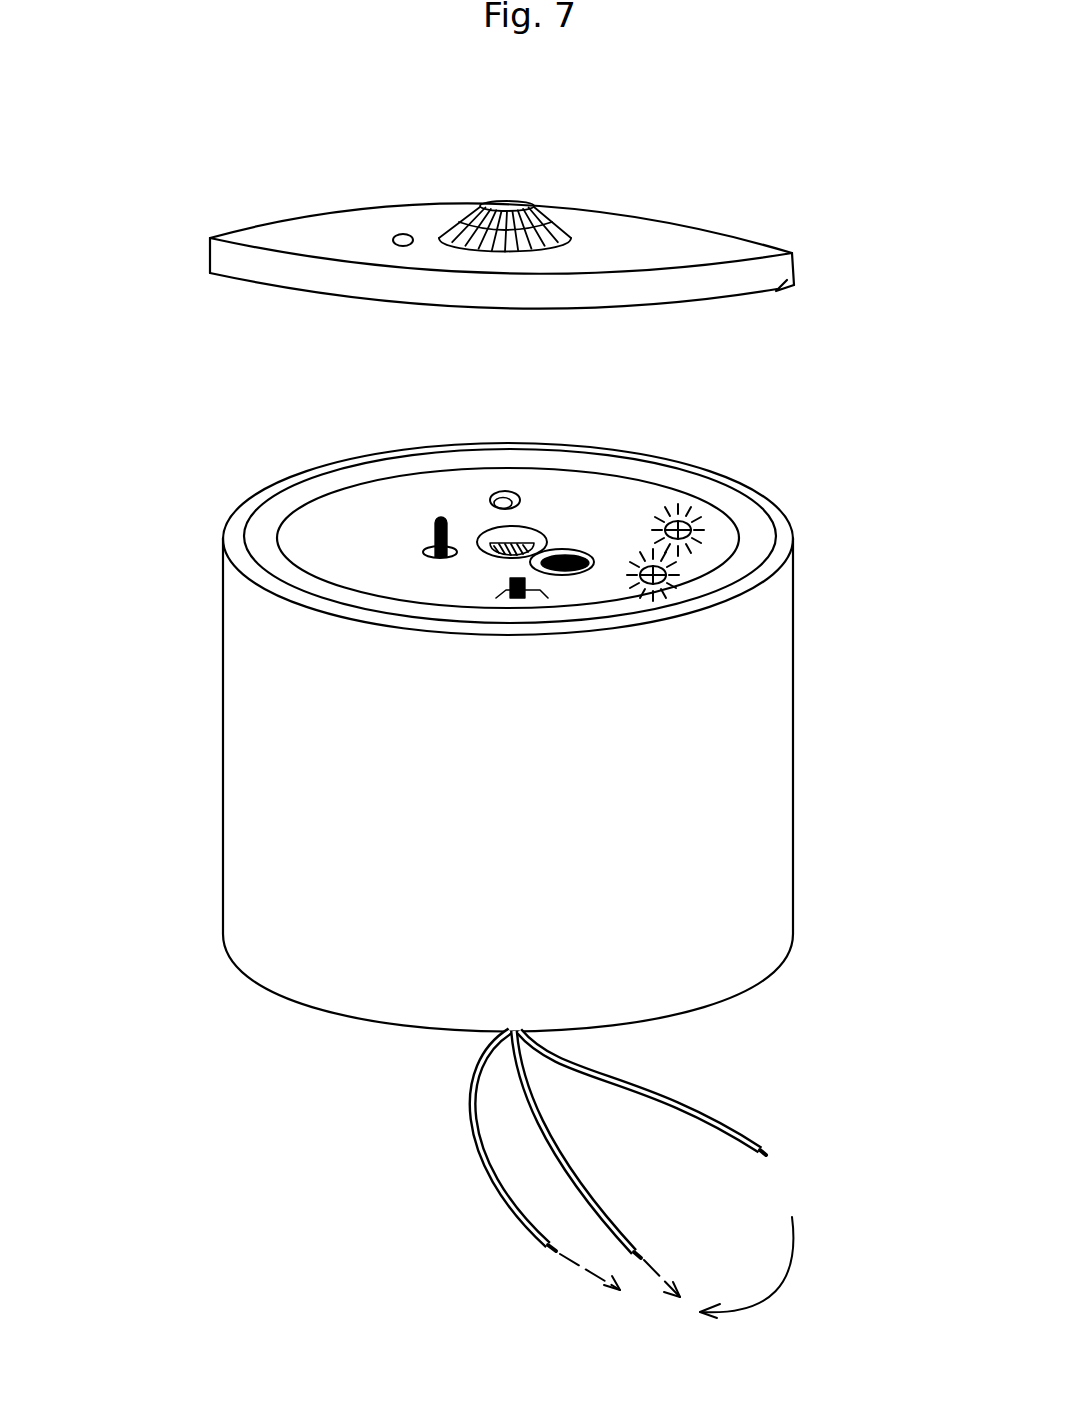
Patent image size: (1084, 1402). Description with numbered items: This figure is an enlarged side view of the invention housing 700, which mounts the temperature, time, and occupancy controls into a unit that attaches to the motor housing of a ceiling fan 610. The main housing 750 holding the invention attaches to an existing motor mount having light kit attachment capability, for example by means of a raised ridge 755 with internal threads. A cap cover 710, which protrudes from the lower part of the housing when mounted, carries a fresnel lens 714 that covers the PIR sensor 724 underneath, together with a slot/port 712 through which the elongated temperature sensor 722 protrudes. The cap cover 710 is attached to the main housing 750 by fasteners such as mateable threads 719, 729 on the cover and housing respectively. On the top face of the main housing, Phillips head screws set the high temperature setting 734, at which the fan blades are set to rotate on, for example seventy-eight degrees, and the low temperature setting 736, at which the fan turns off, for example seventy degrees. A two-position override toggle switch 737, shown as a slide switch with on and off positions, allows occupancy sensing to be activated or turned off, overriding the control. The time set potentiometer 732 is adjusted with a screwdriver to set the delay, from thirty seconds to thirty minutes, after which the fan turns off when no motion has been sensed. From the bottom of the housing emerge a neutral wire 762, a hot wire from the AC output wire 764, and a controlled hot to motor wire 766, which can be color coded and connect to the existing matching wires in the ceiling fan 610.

The housing 700 is at (173, 188).
The cap cover 710 is at (318, 232).
The slot/port 712 is at (407, 233).
The Fresnel lens 714 is at (547, 217).
The mateable threads 719 is at (777, 291).
The elongated temperature sensor 722 is at (432, 536).
The PIR sensor 724 is at (528, 545).
The mateable threads 729 is at (795, 680).
The time set potentiometer 732 is at (493, 494).
The high temperature setting 734 is at (692, 528).
The low temperature setting 736 is at (668, 573).
The override toggle switch 737 is at (535, 600).
The main housing 750 is at (283, 840).
The raised ridge 755 is at (320, 1008).
The neutral wire 762 is at (738, 1120).
The hot wire from AC output 764 is at (557, 1143).
The controlled hot to motor wire 766 is at (462, 1127).
The ceiling fan 610 is at (670, 1271).